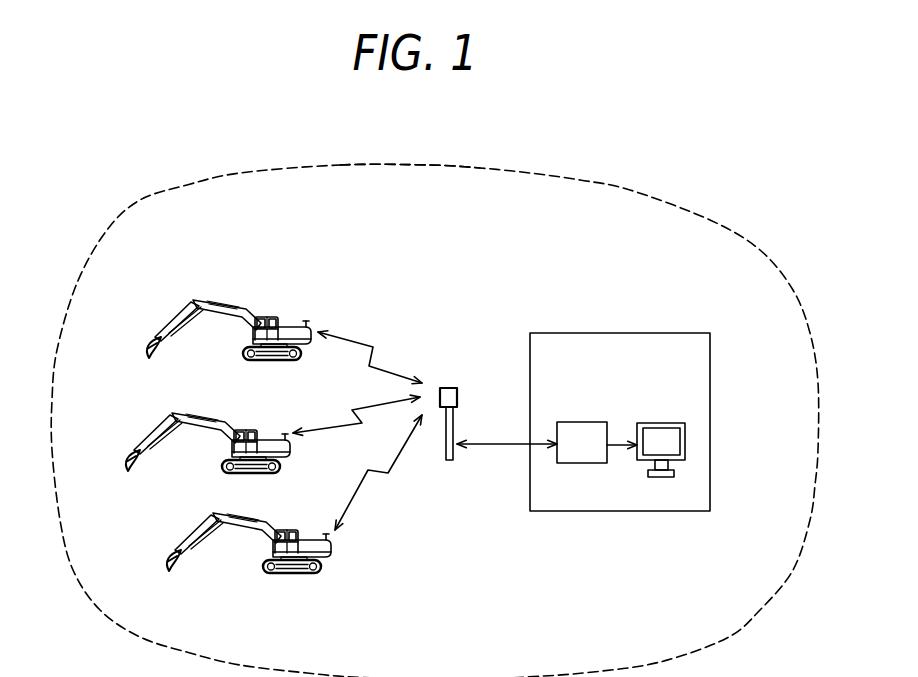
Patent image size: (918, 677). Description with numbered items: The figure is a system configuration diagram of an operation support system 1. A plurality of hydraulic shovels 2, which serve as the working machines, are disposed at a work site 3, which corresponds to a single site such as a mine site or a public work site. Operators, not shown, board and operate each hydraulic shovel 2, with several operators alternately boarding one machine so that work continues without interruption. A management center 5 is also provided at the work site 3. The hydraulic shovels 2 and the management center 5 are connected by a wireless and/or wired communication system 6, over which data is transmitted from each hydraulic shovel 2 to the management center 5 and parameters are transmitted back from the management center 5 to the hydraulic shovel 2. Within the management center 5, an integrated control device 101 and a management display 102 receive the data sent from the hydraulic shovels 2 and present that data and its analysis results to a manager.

The operation support system 1 is at (648, 130).
The hydraulic shovel 2 is at (274, 318).
The work site 3 is at (233, 175).
The management center 5 is at (645, 333).
The communication system 6 is at (455, 388).
The integrated control device 101 is at (578, 422).
The management display 102 is at (653, 423).